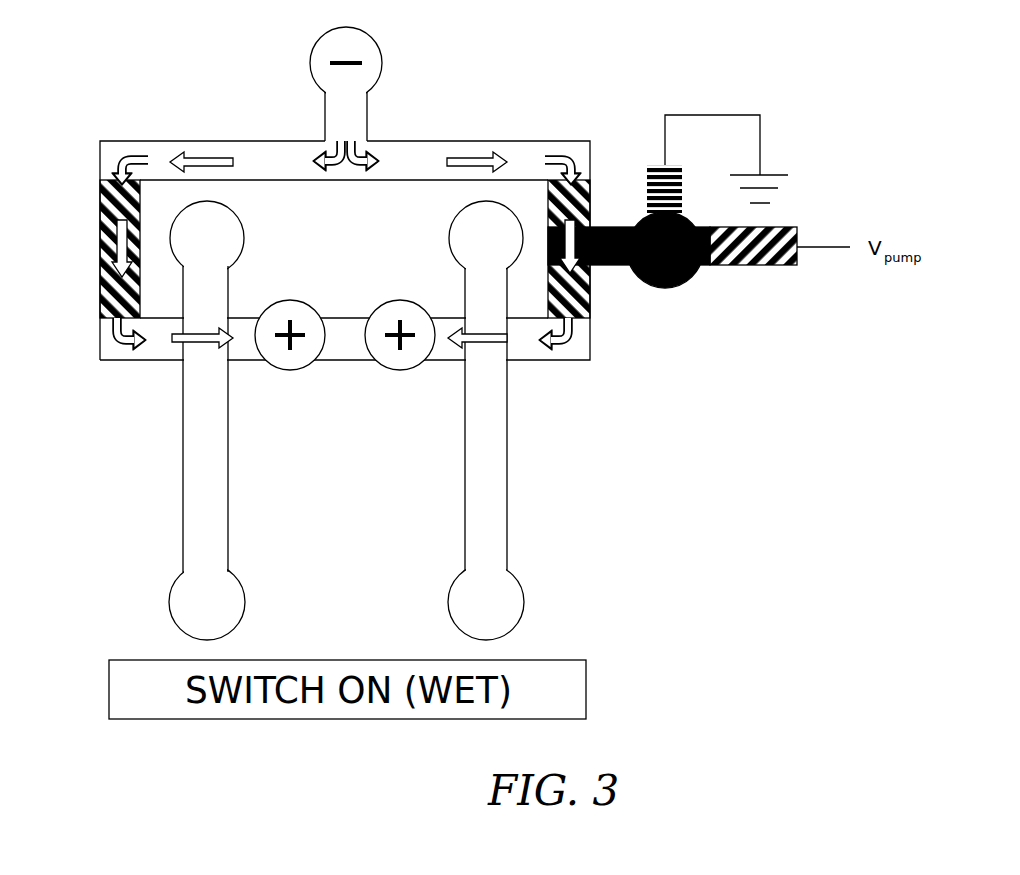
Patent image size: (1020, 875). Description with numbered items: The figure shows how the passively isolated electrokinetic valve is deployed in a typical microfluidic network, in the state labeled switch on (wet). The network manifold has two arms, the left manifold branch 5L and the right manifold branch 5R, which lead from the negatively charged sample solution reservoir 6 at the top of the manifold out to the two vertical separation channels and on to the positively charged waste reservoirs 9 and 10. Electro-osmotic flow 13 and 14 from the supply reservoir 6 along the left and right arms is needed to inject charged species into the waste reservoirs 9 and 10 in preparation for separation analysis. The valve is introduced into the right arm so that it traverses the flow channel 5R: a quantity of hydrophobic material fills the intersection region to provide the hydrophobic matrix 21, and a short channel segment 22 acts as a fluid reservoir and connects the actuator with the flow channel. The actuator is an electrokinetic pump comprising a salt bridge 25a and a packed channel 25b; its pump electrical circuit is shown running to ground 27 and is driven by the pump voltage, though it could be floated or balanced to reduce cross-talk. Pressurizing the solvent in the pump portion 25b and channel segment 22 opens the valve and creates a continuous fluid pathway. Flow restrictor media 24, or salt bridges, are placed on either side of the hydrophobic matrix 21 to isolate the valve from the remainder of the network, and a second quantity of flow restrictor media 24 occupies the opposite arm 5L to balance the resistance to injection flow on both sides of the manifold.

The manifold branch 5L is at (100, 150).
The manifold branch 5R is at (592, 345).
The sample solution reservoir 6 is at (380, 50).
The waste reservoir 9 is at (293, 370).
The waste reservoir 10 is at (402, 300).
The block arrow 13 is at (213, 157).
The block arrow 14 is at (493, 158).
The hydrophobic matrix 21 is at (607, 267).
The channel segment 22 is at (680, 287).
The flow restrictor 24 is at (591, 197).
The salt bridge 25a is at (682, 198).
The packed channel 25b is at (753, 265).
The ground 27 is at (782, 173).